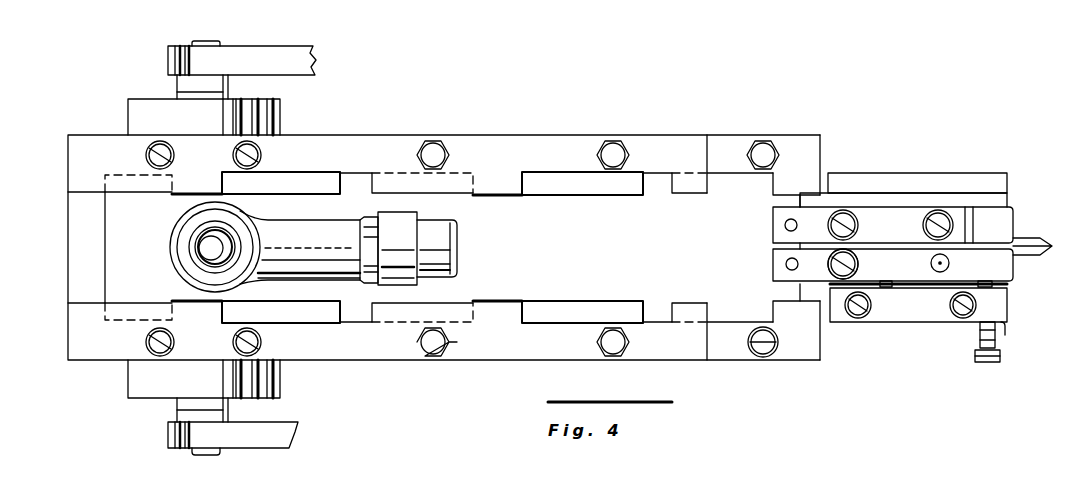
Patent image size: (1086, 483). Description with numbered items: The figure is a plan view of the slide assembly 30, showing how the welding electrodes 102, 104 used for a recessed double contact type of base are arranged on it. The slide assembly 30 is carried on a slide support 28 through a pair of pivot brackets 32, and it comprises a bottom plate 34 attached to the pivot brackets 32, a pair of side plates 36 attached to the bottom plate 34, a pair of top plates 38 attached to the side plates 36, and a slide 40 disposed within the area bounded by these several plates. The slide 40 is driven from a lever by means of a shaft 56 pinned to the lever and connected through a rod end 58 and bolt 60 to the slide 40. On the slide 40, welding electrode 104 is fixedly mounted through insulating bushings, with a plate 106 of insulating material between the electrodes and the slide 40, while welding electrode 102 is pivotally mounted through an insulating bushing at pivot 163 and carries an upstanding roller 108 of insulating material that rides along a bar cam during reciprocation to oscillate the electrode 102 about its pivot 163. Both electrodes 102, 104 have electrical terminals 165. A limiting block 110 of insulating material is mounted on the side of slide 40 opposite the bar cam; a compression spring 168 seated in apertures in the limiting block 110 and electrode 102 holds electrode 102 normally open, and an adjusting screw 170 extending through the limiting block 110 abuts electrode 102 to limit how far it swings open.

The slide support 28 is at (168, 60).
The slide assembly 30 is at (622, 114).
The pivot brackets 32 is at (128, 110).
The bottom plate 34 is at (822, 168).
The side plates 36 is at (740, 143).
The top plates 38 is at (517, 113).
The slide 40 is at (556, 205).
The shaft 56 is at (203, 254).
The rod end 58 is at (338, 212).
The bolt 60 is at (410, 219).
The welding electrode 102 is at (1013, 268).
The welding electrode 104 is at (1012, 218).
The plate of insulating material 106 is at (957, 200).
The roller of insulating material 108 is at (826, 269).
The limiting block 110 is at (960, 320).
The pivot 163 is at (946, 276).
The electrical terminals 165 is at (788, 258).
The compression spring 168 is at (878, 290).
The adjusting screw 170 is at (1000, 350).